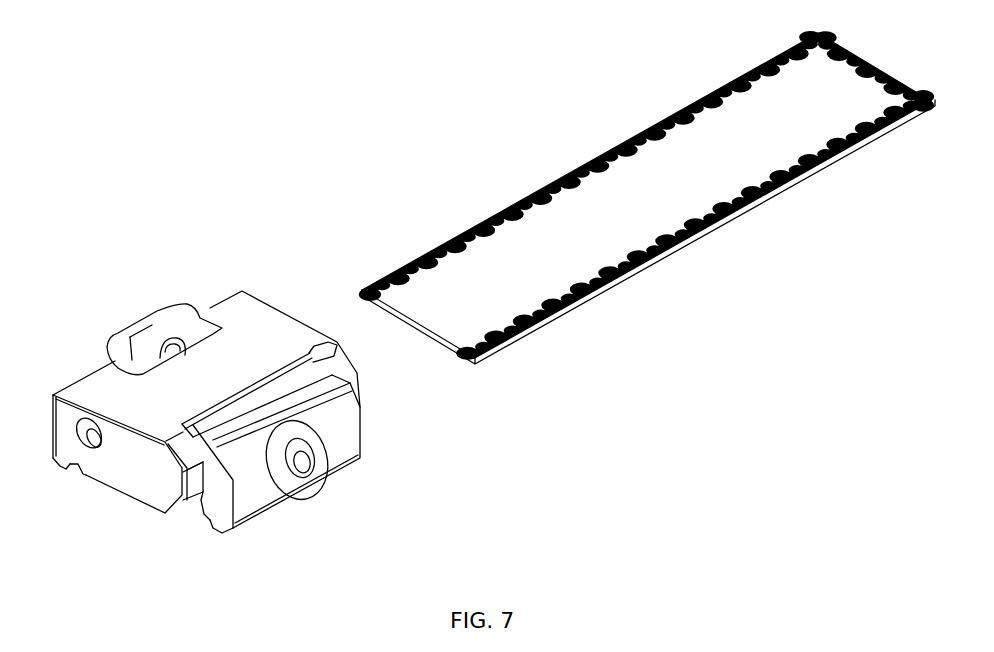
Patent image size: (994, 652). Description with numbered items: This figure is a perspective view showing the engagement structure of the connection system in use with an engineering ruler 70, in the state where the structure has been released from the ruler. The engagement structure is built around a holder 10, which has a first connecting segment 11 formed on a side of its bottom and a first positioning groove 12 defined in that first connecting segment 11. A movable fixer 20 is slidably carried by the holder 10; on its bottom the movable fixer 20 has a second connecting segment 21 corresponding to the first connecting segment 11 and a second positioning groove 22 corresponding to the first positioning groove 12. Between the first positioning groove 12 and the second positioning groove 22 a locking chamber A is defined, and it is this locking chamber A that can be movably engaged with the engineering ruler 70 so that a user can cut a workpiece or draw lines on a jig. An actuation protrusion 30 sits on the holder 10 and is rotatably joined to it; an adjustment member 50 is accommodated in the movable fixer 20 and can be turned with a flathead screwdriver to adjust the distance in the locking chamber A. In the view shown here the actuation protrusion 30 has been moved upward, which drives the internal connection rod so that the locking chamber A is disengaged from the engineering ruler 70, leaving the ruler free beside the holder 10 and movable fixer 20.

The holder 10 is at (246, 318).
The first connecting segment 11 is at (70, 464).
The first positioning groove 12 is at (80, 470).
The movable fixer 20 is at (351, 436).
The second connecting segment 21 is at (210, 532).
The second positioning groove 22 is at (211, 523).
The actuation protrusion 30 is at (154, 328).
The adjustment member 50 is at (281, 480).
The engineering ruler 70 is at (660, 120).
The locking chamber A is at (123, 500).